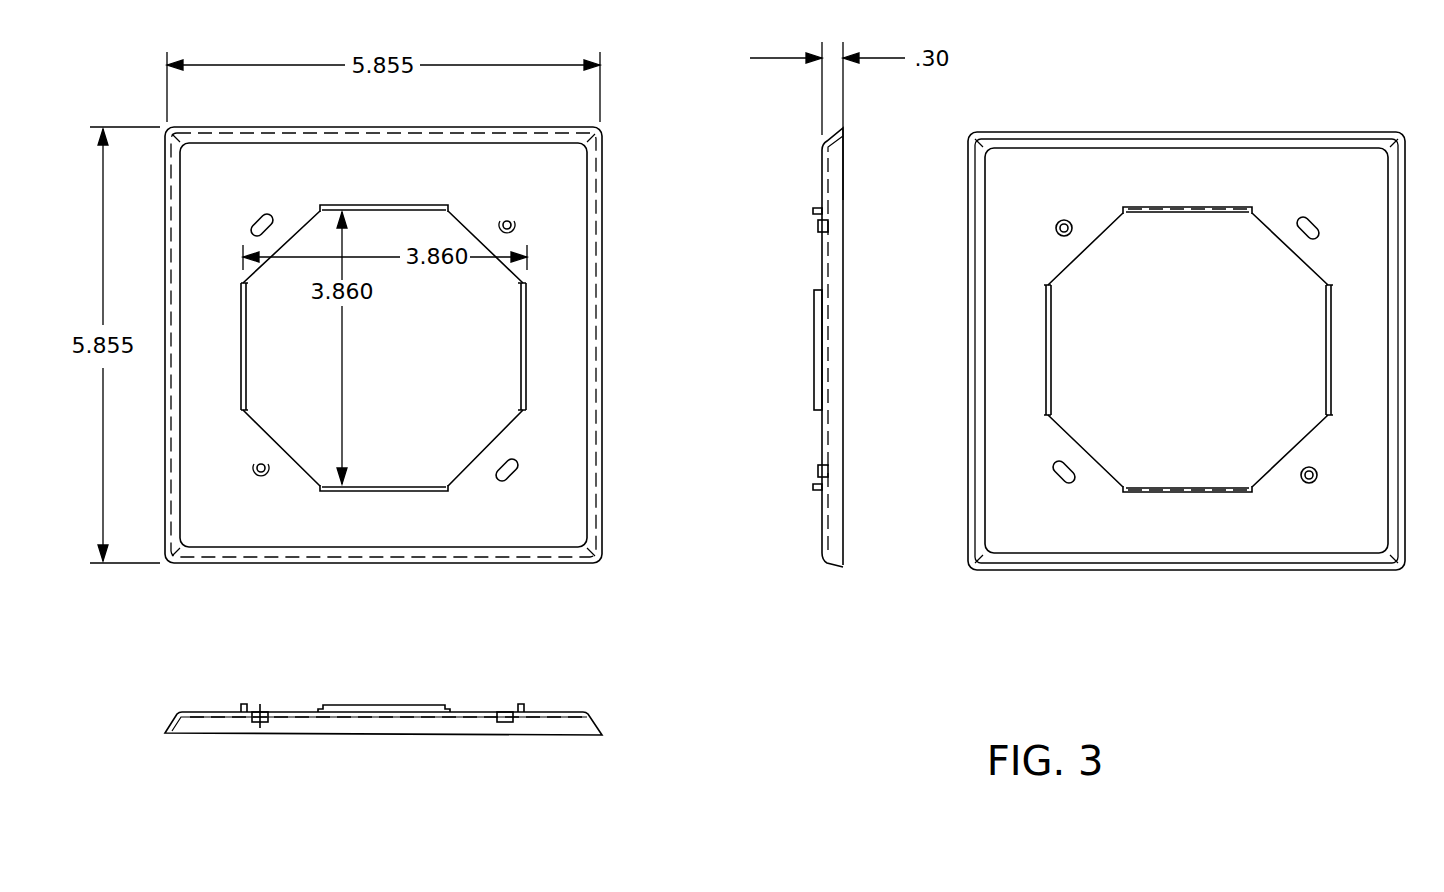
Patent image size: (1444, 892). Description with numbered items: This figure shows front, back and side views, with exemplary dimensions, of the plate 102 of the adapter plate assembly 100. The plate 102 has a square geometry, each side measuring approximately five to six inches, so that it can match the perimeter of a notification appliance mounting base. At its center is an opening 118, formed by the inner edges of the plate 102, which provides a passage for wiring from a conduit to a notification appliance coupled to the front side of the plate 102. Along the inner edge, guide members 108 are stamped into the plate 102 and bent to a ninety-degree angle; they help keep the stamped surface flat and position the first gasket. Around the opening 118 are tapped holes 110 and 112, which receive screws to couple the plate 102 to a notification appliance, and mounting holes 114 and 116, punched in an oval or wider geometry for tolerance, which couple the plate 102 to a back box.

The adapter plate assembly 100 is at (1277, 55).
The plate 102 is at (380, 128).
The guide members 108 is at (372, 207).
The tapped hole 110 is at (268, 465).
The tapped hole 112 is at (512, 220).
The mounting hole 114 is at (268, 218).
The mounting hole 116 is at (500, 465).
The opening 118 is at (362, 345).